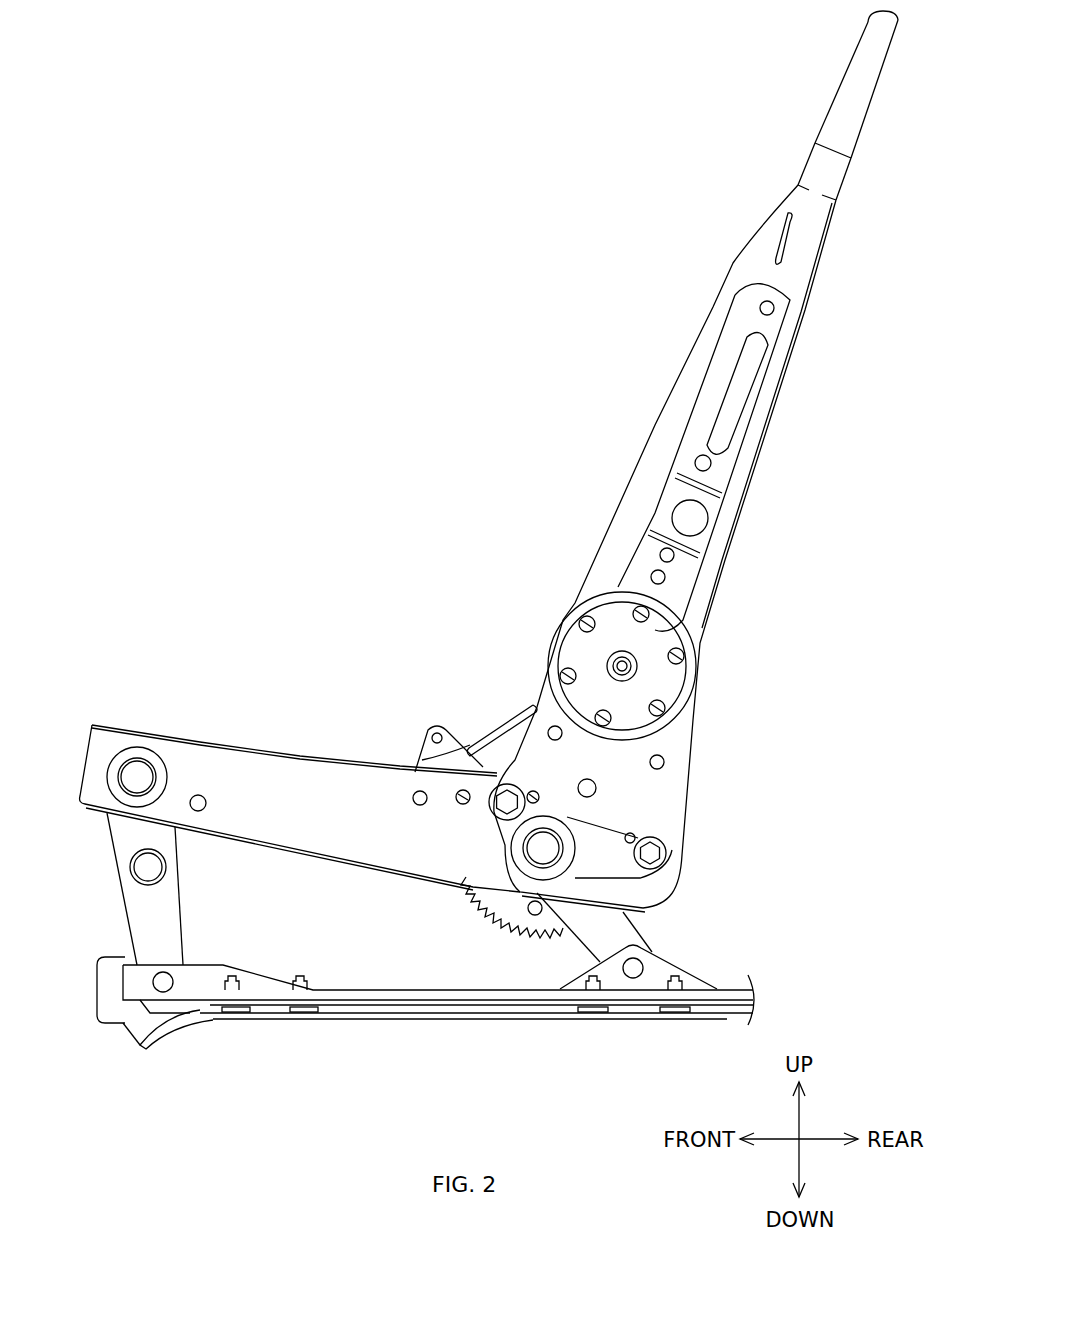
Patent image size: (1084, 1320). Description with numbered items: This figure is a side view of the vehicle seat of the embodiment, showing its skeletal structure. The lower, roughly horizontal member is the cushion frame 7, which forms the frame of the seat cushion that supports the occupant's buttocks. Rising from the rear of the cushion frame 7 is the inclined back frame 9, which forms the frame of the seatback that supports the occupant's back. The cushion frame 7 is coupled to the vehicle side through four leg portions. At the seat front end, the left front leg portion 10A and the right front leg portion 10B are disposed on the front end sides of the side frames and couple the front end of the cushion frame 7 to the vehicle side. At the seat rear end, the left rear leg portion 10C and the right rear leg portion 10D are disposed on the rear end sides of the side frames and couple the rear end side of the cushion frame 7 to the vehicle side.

The cushion frame 7 is at (249, 740).
The back frame 9 is at (652, 421).
The left front leg portion 10A is at (222, 889).
The right front leg portion 10B is at (163, 913).
The left rear leg portion 10C is at (662, 941).
The right rear leg portion 10D is at (625, 928).